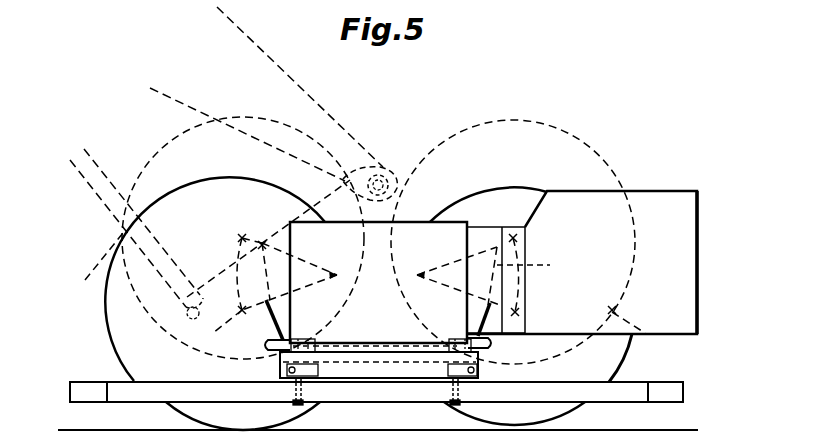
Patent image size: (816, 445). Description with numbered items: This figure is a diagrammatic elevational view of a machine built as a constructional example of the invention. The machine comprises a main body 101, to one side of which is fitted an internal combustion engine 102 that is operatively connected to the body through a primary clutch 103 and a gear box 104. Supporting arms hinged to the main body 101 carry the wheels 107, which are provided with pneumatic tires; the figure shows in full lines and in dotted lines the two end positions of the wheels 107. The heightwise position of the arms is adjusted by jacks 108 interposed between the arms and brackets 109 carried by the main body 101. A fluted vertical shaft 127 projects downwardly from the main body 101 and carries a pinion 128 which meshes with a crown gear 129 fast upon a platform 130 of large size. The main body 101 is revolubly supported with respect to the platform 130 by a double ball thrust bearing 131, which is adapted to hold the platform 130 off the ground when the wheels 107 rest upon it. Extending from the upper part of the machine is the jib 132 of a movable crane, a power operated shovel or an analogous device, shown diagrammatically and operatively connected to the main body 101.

The main body 101 is at (383, 228).
The internal combustion engine 102 is at (640, 203).
The primary clutch 103 is at (506, 228).
The gear box 104 is at (475, 235).
The wheels 107 is at (123, 297).
The jacks 108 is at (272, 302).
The brackets 109 is at (280, 348).
The fluted vertical shaft 127 is at (310, 343).
The pinion 128 is at (327, 378).
The crown gear 129 is at (445, 378).
The platform 130 is at (403, 392).
The double ball thrust bearing 131 is at (478, 360).
The jib 132 is at (172, 91).